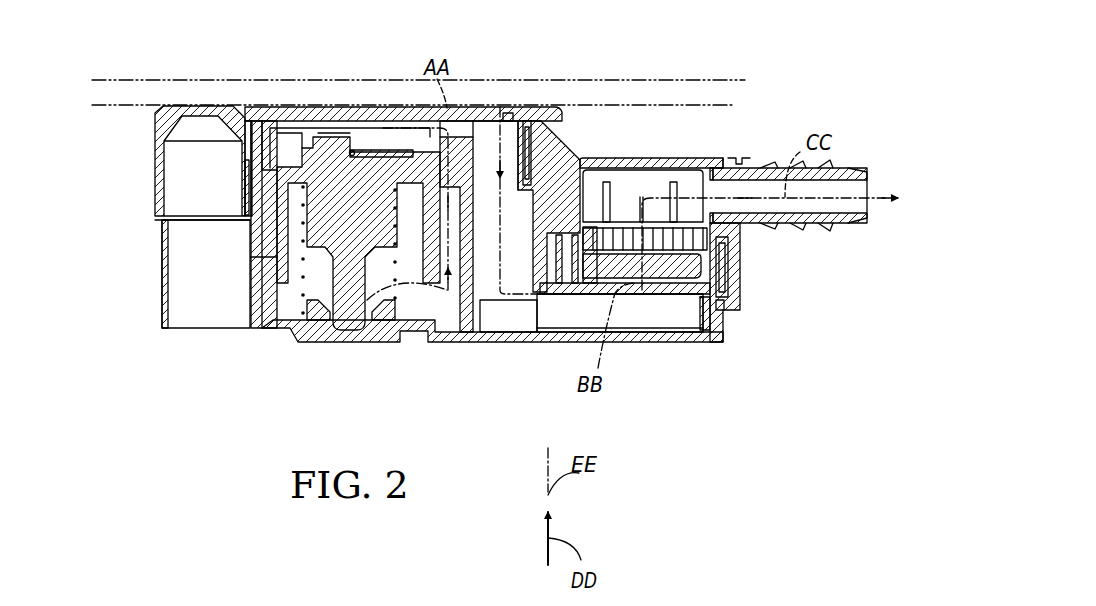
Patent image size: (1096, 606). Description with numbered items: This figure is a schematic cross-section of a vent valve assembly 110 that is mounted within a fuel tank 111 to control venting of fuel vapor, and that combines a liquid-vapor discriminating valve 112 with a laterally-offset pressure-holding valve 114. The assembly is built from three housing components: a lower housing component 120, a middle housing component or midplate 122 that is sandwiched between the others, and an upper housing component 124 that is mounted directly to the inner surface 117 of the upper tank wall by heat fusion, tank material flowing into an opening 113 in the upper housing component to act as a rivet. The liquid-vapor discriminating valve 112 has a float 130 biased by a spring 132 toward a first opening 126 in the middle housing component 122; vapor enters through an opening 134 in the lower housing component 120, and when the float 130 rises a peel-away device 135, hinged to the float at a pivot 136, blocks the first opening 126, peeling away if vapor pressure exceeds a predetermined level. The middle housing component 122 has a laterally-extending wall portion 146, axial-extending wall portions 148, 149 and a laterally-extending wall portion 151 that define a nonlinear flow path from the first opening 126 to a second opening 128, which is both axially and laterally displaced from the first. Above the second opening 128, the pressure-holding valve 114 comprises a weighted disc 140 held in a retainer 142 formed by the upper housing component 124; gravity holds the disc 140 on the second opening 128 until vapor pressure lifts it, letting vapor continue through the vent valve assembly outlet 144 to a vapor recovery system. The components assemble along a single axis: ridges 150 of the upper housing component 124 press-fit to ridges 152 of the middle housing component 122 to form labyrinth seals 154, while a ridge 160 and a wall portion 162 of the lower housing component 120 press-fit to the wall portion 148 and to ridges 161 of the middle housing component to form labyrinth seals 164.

The vent valve assembly 110 is at (135, 122).
The fuel tank 111 is at (190, 80).
The liquid-vapor discriminating valve 112 is at (303, 348).
The opening 113 is at (195, 118).
The pressure-holding valve 114 is at (688, 306).
The inner surface 117 is at (736, 106).
The first housing component 120 is at (562, 346).
The second housing component 122 is at (412, 128).
The third housing component 124 is at (631, 158).
The first opening 126 is at (388, 133).
The second opening 128 is at (641, 287).
The float 130 is at (366, 223).
The spring 132 is at (367, 313).
The opening 134 is at (330, 332).
The peel-away device 135 is at (377, 152).
The pivot 136 is at (352, 152).
The weighted disc 140 is at (673, 257).
The retainer 142 is at (593, 212).
The vent valve assembly outlet 144 is at (870, 190).
The laterally-extending wall portion 146 is at (449, 140).
The axial-extending wall portion 148 is at (481, 212).
The axial-extending wall portion 149 is at (508, 114).
The ridges 150 is at (262, 145).
The laterally-extending wall portion 151 is at (661, 299).
The ridges 152 is at (245, 190).
The labyrinth seals 154 is at (239, 170).
The ridge 160 is at (725, 321).
The ridges 161 is at (709, 307).
The wall portion 162 is at (370, 346).
The labyrinth seal 164 is at (462, 336).